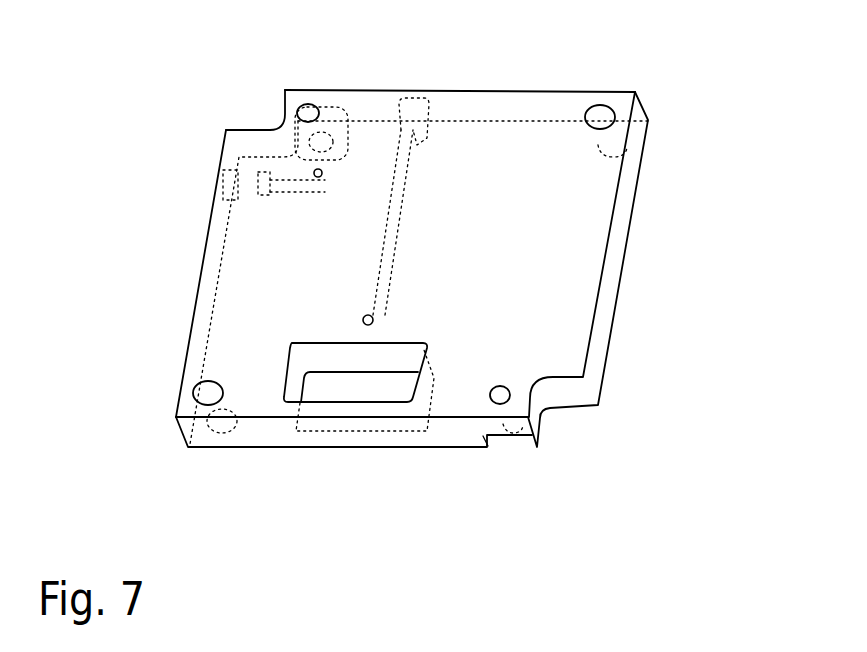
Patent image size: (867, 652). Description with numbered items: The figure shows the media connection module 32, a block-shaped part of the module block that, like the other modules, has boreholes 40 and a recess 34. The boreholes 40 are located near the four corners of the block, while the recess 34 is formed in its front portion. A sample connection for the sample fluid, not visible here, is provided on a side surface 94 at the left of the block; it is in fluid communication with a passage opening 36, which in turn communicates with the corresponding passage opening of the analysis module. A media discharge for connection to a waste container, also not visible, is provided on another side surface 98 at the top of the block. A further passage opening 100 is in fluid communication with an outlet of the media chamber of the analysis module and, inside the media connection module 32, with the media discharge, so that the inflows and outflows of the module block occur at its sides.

The media connection module 32 is at (677, 251).
The recess 34 is at (352, 395).
The passage opening 36 is at (322, 172).
The boreholes 40 is at (306, 111).
The side surface 94 is at (205, 238).
The side surface 98 is at (485, 92).
The passage opening 100 is at (373, 319).